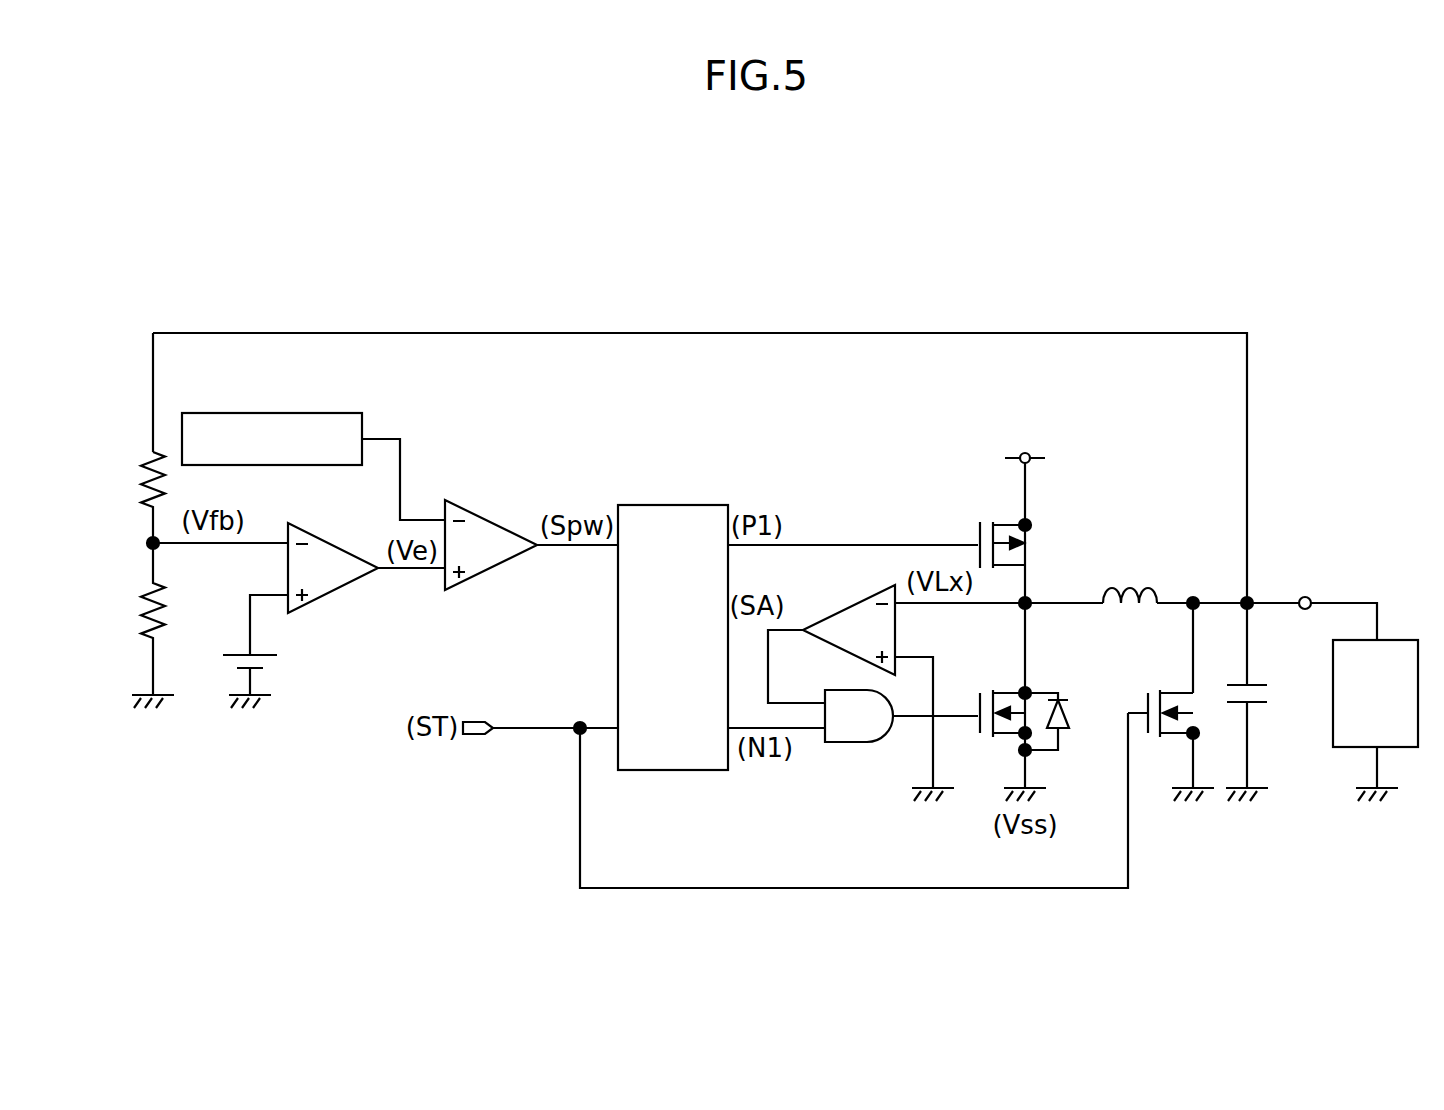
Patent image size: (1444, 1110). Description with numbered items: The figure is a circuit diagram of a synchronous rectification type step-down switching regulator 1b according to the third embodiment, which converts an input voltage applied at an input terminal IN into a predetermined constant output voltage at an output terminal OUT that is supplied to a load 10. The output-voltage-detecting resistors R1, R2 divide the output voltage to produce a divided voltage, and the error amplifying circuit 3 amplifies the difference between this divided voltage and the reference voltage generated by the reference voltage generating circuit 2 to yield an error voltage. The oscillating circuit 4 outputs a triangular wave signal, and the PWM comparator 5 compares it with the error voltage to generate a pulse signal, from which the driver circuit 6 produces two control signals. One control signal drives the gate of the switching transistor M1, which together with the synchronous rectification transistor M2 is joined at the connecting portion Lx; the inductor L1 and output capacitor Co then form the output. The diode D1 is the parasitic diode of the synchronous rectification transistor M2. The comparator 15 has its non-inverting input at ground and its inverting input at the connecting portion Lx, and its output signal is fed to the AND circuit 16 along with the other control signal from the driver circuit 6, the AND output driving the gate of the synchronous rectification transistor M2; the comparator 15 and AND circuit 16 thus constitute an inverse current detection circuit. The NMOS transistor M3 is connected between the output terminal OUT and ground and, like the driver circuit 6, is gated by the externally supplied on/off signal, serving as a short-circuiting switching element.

The switching regulator 1b is at (784, 300).
The reference voltage generating circuit 2 is at (270, 660).
The error amplifying circuit 3 is at (330, 544).
The oscillating circuit 4 is at (280, 413).
The PWM comparator 5 is at (493, 523).
The driver circuit 6 is at (675, 505).
The load 10 is at (1391, 640).
The comparator 15 is at (855, 604).
The AND circuit 16 is at (840, 742).
The output-voltage-detecting resistor R1 is at (133, 497).
The output-voltage-detecting resistor R2 is at (137, 625).
The switching transistor M1 is at (1005, 530).
The synchronous rectification transistor M2 is at (1005, 700).
The NMOS transistor M3 is at (1171, 702).
The diode D1 is at (1067, 721).
The inductor L1 is at (1162, 578).
The output capacitor Co is at (1265, 702).
The input terminal IN is at (1030, 463).
The output terminal OUT is at (1305, 610).
The connecting portion Lx is at (1030, 597).